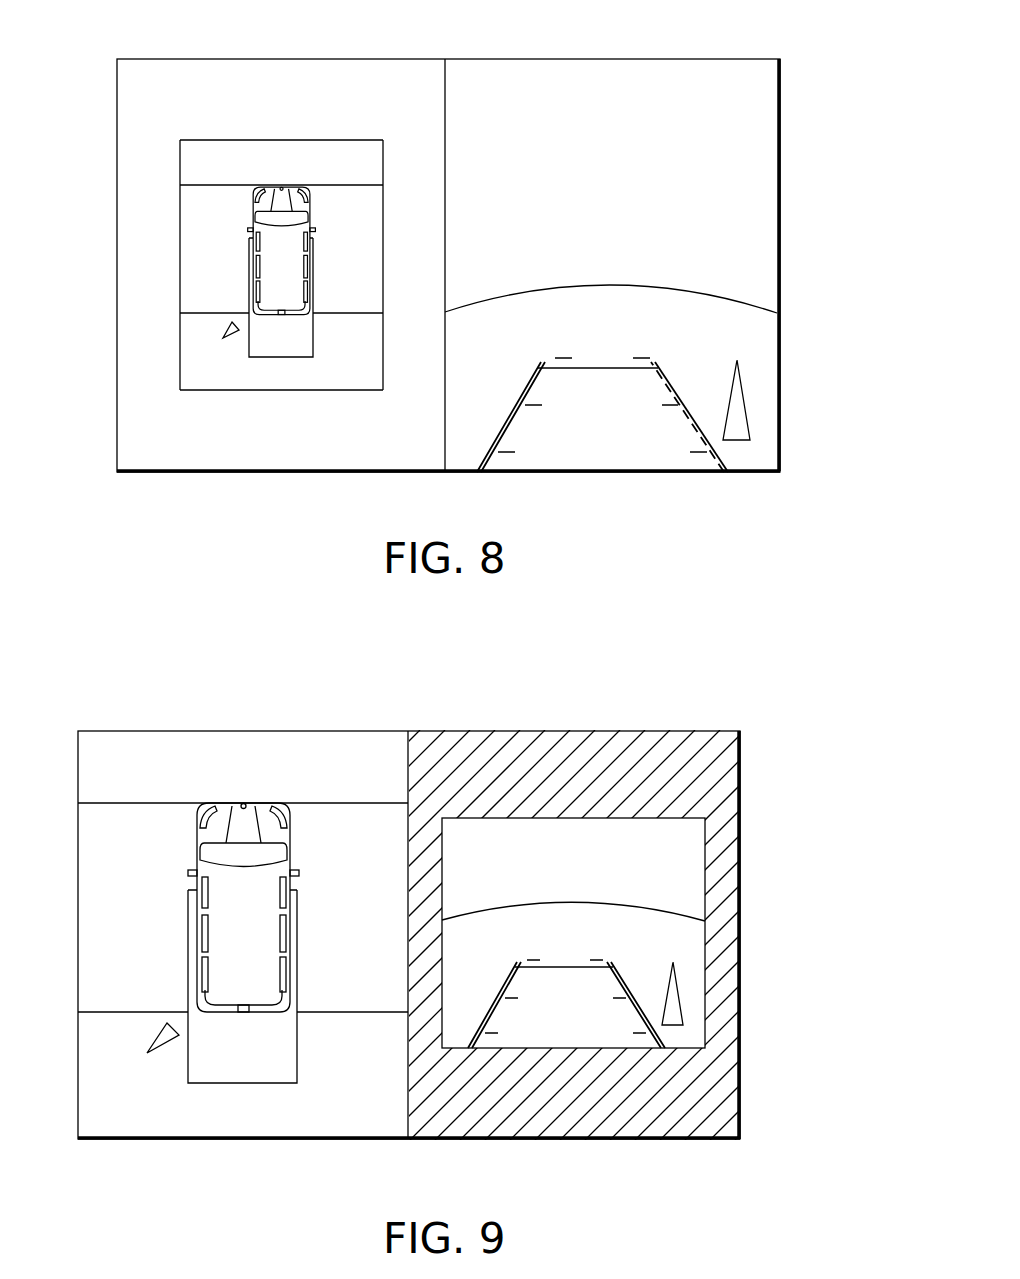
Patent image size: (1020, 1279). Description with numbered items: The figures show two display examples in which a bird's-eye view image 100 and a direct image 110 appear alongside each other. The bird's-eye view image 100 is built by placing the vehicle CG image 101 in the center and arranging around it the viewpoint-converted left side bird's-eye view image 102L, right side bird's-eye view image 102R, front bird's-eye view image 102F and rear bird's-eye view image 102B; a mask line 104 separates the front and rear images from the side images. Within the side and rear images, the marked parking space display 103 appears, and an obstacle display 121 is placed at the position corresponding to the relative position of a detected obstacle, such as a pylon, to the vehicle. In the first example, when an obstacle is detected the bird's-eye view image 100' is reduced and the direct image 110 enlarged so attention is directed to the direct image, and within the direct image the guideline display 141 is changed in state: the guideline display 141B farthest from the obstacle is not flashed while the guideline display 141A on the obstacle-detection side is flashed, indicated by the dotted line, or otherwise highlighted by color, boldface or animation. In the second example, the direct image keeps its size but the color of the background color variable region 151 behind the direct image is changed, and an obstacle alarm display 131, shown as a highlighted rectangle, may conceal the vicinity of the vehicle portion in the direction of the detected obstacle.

In FIG. 8, the bird's-eye view image 100 is at (436, 239).
In FIG. 9, the bird's-eye view image 100 is at (396, 907).
In FIG. 8, the bird's-eye view image 100' is at (251, 265).
In FIG. 8, the direct image 110 is at (722, 48).
In FIG. 9, the direct image 110 is at (688, 715).
In FIG. 8, the vehicle computer-generated (CG) image 101 is at (255, 223).
In FIG. 9, the vehicle computer-generated (CG) image 101 is at (200, 864).
In FIG. 8, the front bird's-eye view image 102F is at (284, 150).
In FIG. 9, the front bird's-eye view image 102F is at (244, 738).
In FIG. 8, the rear bird's-eye view image 102B is at (352, 388).
In FIG. 9, the rear bird's-eye view image 102B is at (122, 1138).
In FIG. 8, the left side bird's-eye view image 102L is at (185, 262).
In FIG. 9, the left side bird's-eye view image 102L is at (85, 881).
In FIG. 8, the right side bird's-eye view image 102R is at (378, 262).
In FIG. 9, the right side bird's-eye view image 102R is at (378, 1005).
In FIG. 8, the marked parking space display 103 is at (278, 360).
In FIG. 8, the mask line 104 is at (218, 182).
In FIG. 9, the mask line 104 is at (114, 800).
In FIG. 8, the obstacle display 121 is at (230, 340).
In FIG. 9, the obstacle display 121 is at (157, 1048).
In FIG. 9, the obstacle alarm display 131 is at (245, 1085).
In FIG. 9, the guideline display 141 is at (479, 1048).
In FIG. 8, the guideline display on the obstacle-detection side 141A is at (712, 472).
In FIG. 8, the guideline display on the obstacle non-detection side 141B is at (492, 472).
In FIG. 9, the background color variable region 151 is at (730, 783).